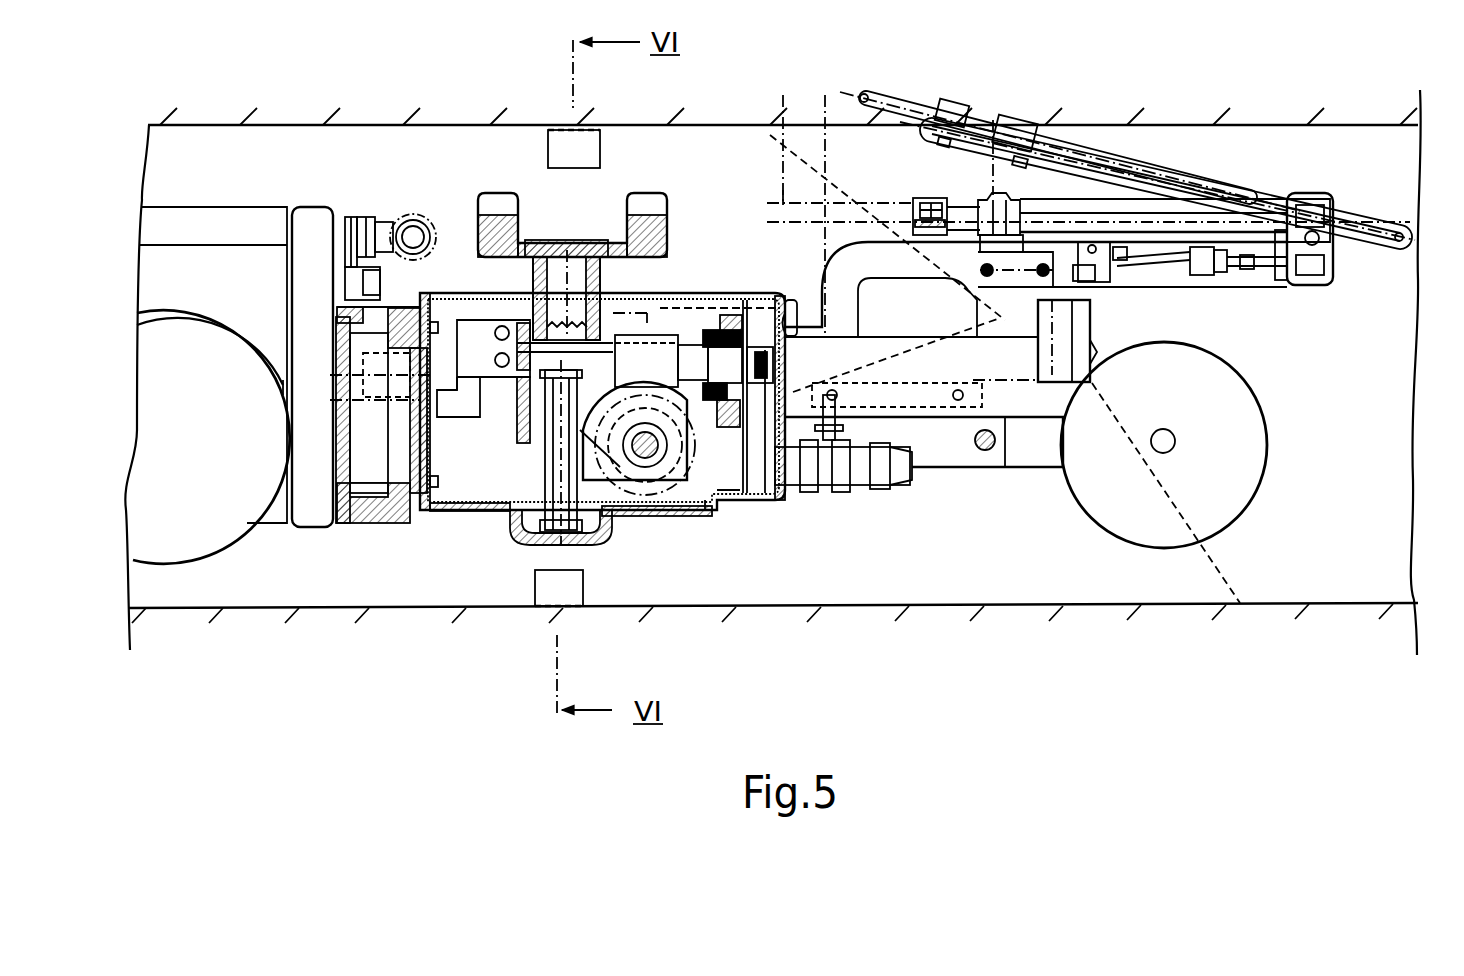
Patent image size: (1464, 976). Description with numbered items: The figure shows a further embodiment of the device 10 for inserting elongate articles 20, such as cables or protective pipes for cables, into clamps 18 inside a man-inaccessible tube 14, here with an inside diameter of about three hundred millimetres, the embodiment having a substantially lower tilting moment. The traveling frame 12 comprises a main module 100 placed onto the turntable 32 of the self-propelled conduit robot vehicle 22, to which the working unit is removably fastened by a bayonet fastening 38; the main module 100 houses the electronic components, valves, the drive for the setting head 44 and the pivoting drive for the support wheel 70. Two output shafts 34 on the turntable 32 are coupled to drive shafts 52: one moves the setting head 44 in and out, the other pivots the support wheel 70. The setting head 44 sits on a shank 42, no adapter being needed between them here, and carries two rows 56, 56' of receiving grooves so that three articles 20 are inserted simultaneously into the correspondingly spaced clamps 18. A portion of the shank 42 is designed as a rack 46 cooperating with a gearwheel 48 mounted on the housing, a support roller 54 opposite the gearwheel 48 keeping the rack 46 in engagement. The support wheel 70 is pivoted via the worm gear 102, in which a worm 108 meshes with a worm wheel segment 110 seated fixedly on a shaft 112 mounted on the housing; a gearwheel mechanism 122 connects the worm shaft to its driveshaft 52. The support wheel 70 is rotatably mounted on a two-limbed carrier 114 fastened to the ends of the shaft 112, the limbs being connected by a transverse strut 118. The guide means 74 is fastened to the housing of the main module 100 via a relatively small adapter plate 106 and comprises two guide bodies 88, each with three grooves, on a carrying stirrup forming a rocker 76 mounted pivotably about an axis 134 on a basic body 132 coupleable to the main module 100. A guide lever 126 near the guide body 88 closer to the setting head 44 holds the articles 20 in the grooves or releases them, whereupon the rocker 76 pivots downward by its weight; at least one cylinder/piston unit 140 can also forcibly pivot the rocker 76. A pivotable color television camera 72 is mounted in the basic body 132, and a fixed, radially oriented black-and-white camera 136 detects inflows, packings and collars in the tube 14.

The device 10 is at (814, 549).
The traveling frame 12 is at (408, 534).
The man-inaccessible tube 14 is at (1272, 116).
The clamps 18 is at (548, 150).
The articles 20 is at (795, 185).
The conduit robot vehicle 22 is at (194, 198).
The turntable 32 is at (370, 540).
The output shafts 34 is at (322, 350).
The bayonet fastening 38 is at (317, 545).
The shank 42 is at (578, 295).
The setting head 44 is at (672, 198).
The rack 46 is at (633, 535).
The gearwheel 48 is at (489, 515).
The drive shaft 52 is at (440, 365).
The support roller 54 is at (545, 406).
The row of receiving grooves 56 is at (469, 162).
The row of receiving grooves 56' is at (647, 160).
The support wheel 70 is at (1160, 528).
The color television camera 72 is at (1030, 372).
The guide means 74 is at (1126, 194).
The rocker 76 is at (1238, 162).
The guide bodies 88 is at (948, 198).
The main module 100 is at (658, 537).
The worm gear 102 is at (770, 540).
The adapter plate 106 is at (797, 302).
The worm 108 is at (662, 292).
The worm wheel segment 110 is at (657, 453).
The shaft 112 is at (699, 410).
The carrier 114 is at (957, 472).
The transverse strut 118 is at (993, 452).
The gearwheel mechanism 122 is at (760, 293).
The guide lever 126 is at (1000, 197).
The basic body 132 is at (869, 232).
The axis 134 is at (1335, 256).
The black-and-white camera 136 is at (842, 478).
The cylinder/piston unit 140 is at (1196, 292).